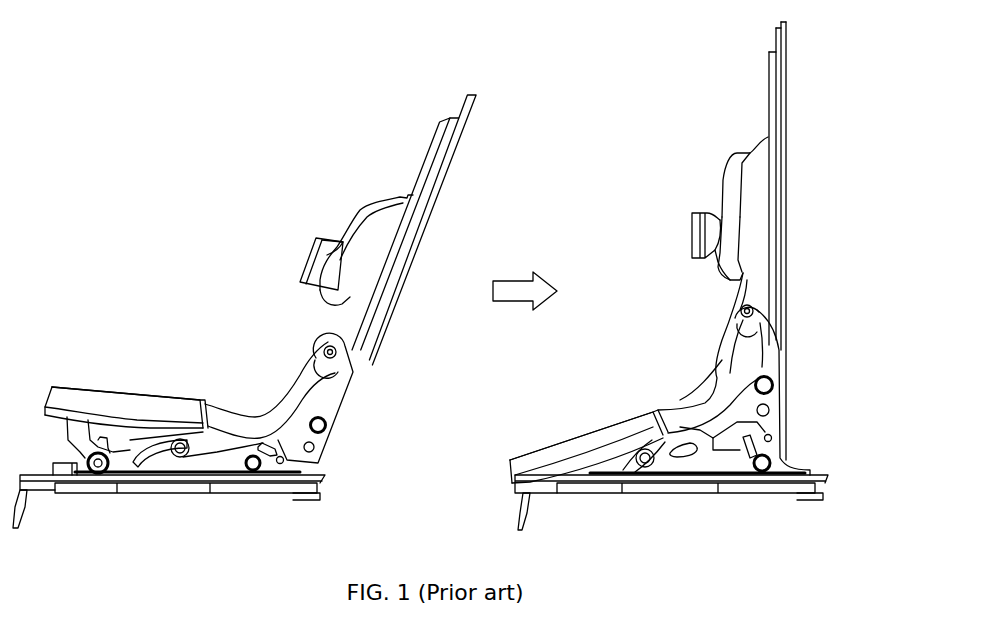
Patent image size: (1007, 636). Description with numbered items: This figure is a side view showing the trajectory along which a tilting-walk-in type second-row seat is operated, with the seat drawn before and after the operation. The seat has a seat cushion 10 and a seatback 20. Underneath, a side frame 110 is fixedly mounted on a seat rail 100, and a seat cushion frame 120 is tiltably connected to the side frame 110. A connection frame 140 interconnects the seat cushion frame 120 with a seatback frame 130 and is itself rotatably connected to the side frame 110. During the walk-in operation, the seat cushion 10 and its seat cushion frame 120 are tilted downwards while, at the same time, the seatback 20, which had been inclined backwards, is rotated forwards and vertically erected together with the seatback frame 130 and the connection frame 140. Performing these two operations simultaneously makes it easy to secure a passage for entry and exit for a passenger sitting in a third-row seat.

The seat cushion 10 is at (80, 374).
The seatback 20 is at (432, 200).
The seat rail 100 is at (137, 490).
The side frame 110 is at (227, 477).
The seat cushion frame 120 is at (130, 398).
The seatback frame 130 is at (377, 312).
The connection frame 140 is at (333, 405).